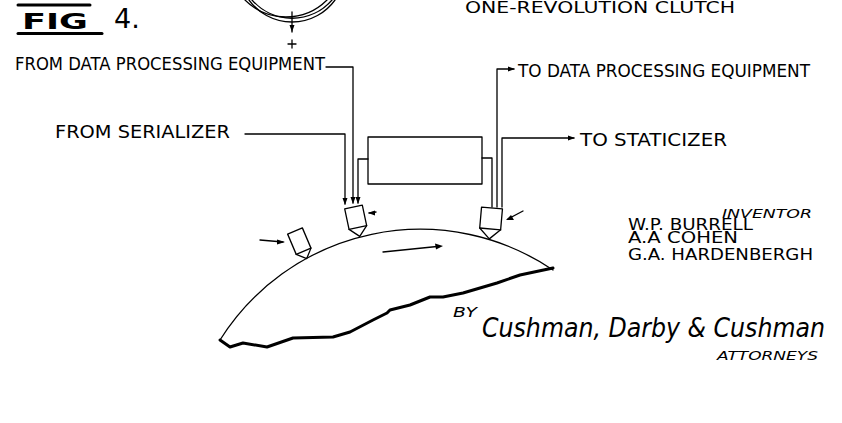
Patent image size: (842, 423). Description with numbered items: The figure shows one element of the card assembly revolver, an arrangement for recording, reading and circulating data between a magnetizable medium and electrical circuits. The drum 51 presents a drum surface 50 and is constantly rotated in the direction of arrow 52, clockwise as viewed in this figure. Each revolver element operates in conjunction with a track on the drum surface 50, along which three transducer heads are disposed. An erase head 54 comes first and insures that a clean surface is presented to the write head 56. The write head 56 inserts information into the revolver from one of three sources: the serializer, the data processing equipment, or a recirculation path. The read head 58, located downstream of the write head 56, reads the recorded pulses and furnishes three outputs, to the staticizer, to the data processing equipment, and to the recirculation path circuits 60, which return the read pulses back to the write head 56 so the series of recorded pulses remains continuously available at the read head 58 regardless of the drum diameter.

The drum surface 50 is at (237, 321).
The drum 51 is at (520, 277).
The arrow of drum rotation 52 is at (313, 274).
The erase transducer head 54 is at (292, 227).
The write transducer head 56 is at (343, 216).
The read transducer head 58 is at (505, 229).
The recirculation path circuits 60 is at (437, 137).